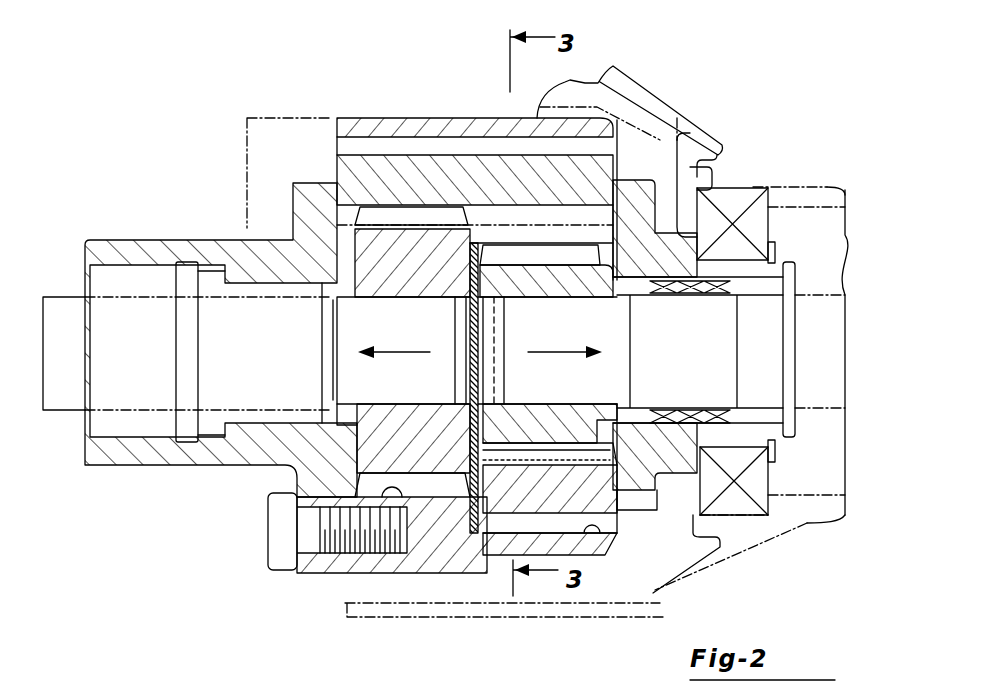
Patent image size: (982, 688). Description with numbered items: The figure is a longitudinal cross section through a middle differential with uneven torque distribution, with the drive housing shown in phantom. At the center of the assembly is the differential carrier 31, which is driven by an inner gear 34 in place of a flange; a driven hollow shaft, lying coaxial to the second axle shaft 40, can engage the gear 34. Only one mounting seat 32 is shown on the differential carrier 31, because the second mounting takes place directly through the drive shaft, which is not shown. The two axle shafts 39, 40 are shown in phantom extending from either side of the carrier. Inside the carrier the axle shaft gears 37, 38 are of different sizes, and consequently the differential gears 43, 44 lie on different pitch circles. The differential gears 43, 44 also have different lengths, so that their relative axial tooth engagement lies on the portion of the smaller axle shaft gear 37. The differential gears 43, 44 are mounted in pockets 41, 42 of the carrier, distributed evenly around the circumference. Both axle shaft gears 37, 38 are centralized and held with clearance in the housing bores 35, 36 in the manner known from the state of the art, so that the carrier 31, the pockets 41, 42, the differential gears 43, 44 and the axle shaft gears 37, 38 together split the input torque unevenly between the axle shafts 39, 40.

The differential carrier 31 is at (522, 115).
The mounting seat 32 is at (700, 262).
The inner gear 34 is at (132, 437).
The housing bore 35 is at (545, 260).
The housing bore 36 is at (357, 497).
The axle shaft gear 37 is at (583, 282).
The axle shaft gear 38 is at (293, 497).
The axle shaft 39 is at (750, 351).
The second axle shaft 40 is at (68, 295).
The pocket 41 is at (598, 540).
The pocket 42 is at (416, 134).
The differential gear 43 is at (613, 493).
The differential gear 44 is at (466, 170).